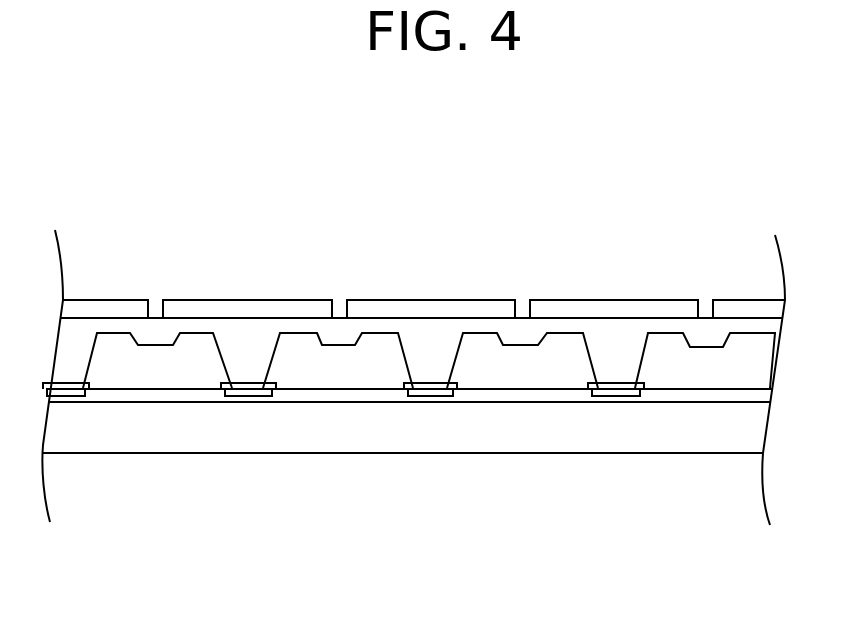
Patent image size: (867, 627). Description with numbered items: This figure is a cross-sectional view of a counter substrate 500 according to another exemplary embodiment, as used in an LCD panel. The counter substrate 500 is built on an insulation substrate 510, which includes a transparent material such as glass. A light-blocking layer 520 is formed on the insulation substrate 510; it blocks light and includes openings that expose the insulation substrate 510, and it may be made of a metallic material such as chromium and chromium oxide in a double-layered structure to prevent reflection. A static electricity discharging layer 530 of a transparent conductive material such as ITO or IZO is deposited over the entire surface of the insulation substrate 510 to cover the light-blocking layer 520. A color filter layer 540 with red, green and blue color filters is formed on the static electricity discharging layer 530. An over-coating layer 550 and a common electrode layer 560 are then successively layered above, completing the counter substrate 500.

The counter substrate 500 is at (405, 176).
The insulation substrate 510 is at (702, 443).
The light-blocking layer 520 is at (613, 393).
The static electricity discharging layer 530 is at (470, 393).
The color filter layer 540 is at (355, 372).
The over-coating layer 550 is at (252, 350).
The common electrode layer 560 is at (243, 308).